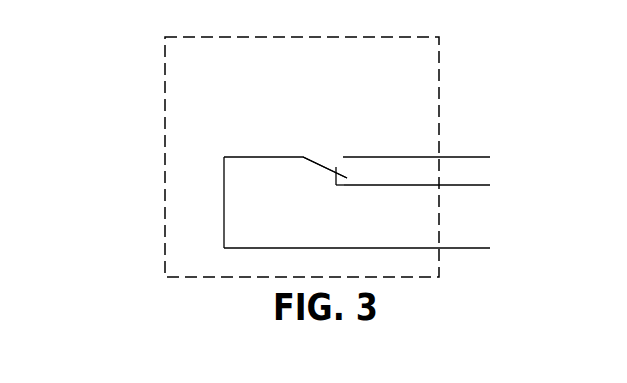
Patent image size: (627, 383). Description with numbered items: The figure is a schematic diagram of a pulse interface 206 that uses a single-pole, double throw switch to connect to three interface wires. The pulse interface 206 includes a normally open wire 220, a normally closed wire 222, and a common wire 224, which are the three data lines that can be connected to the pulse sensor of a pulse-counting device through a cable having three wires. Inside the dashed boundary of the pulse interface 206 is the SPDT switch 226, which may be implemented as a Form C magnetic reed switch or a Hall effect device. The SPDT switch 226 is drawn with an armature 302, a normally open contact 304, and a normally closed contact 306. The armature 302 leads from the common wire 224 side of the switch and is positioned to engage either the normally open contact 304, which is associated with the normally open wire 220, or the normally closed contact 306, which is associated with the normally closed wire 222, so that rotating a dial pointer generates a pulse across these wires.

The pulse interface 206 is at (302, 157).
The single-pole, double throw (SPDT) switch 226 is at (259, 117).
The normally open contact 304 is at (362, 135).
The armature 302 is at (322, 169).
The normally closed contact 306 is at (345, 187).
The normally open (NO) wire 220 is at (439, 158).
The normally closed (NC) wire 222 is at (440, 186).
The common (COM) wire 224 is at (380, 247).